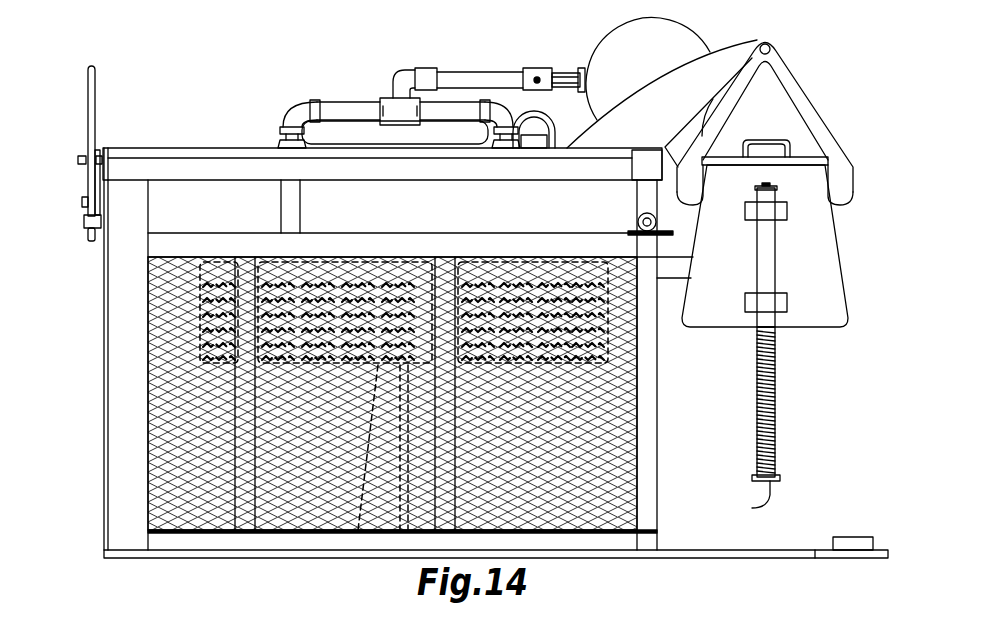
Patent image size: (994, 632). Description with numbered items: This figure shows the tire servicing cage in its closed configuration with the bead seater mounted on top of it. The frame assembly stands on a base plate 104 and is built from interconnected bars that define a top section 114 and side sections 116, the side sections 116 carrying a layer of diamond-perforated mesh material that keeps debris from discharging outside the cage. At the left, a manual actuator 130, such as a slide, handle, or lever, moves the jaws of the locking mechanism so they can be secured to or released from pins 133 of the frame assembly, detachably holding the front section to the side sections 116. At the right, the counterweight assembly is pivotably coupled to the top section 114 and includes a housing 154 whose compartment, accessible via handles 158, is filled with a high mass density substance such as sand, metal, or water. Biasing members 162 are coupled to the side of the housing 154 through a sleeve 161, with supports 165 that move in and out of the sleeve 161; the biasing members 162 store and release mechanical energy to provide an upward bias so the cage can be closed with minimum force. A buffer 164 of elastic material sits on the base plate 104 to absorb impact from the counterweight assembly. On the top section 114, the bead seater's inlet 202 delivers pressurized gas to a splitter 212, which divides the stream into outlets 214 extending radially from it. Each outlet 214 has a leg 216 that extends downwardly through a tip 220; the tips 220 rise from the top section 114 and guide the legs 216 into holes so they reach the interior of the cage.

The base plate 104 is at (790, 552).
The top section 114 is at (152, 150).
The side sections 116 is at (650, 443).
The manual actuator 130 is at (88, 100).
The pins 133 is at (88, 242).
The housing 154 is at (825, 306).
The handles 158 is at (775, 140).
The sleeve 161 is at (770, 258).
The biasing members 162 is at (782, 432).
The buffers 164 is at (855, 543).
The supports 165 is at (752, 508).
The inlet 202 is at (457, 78).
The splitter 212 is at (386, 103).
The outlets 214 is at (352, 107).
The legs 216 is at (281, 200).
The tips 220 is at (282, 140).